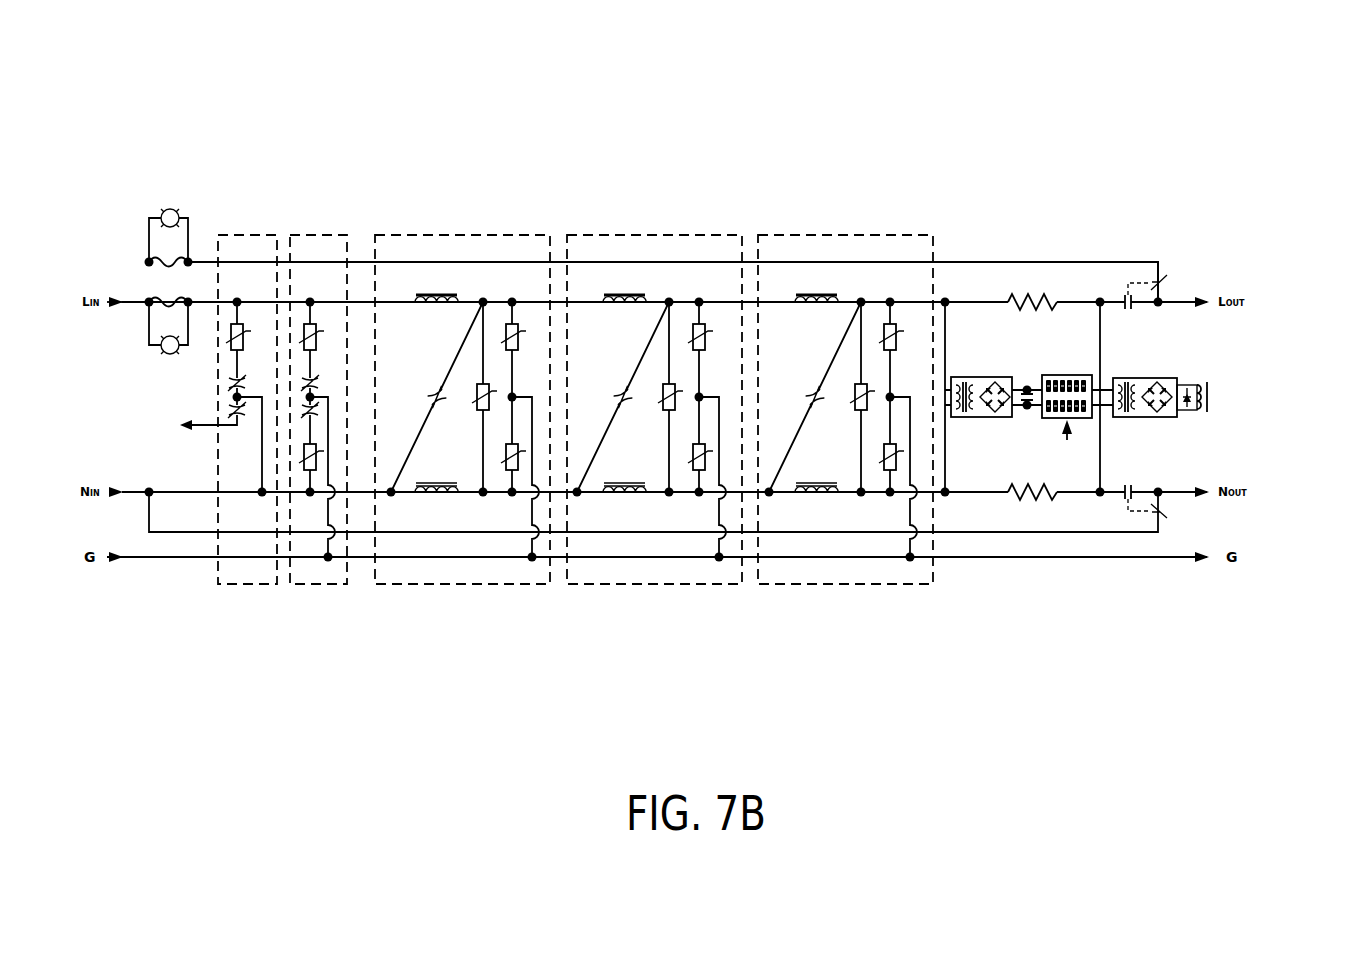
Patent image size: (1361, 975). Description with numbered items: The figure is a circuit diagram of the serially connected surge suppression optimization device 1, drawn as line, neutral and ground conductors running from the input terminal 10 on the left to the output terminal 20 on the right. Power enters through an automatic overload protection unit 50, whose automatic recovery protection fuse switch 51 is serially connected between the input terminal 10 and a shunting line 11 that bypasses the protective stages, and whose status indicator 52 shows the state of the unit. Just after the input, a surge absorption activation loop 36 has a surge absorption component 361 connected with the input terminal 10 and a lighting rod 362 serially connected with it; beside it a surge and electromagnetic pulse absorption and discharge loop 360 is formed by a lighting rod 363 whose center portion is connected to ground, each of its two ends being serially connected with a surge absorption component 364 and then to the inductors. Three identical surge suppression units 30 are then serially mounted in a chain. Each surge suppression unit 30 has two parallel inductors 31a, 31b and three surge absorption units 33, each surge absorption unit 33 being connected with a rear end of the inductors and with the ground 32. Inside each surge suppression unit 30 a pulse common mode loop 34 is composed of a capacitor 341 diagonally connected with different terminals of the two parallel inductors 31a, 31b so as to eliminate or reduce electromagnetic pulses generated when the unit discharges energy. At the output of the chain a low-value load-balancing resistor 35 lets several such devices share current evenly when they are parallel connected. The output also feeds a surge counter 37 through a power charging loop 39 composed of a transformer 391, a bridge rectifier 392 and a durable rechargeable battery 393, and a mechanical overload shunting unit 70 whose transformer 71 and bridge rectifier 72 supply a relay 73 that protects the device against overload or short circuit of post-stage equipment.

The serially connected surge suppression optimization device 1 is at (883, 133).
The input terminal 10 is at (116, 291).
The shunting line 11 is at (970, 262).
The output terminal 20 is at (1231, 260).
The surge suppression unit 30 is at (418, 585).
The inductor 31a is at (437, 290).
The inductor 31b is at (626, 290).
The ground 32 is at (1115, 560).
The surge absorption unit 33 is at (530, 332).
The pulse common mode loop 34 is at (418, 378).
The load-balancing resistor 35 is at (1035, 290).
The surge absorption activation loop 36 is at (233, 408).
The surge counter 37 is at (1063, 375).
The power charging loop 39 is at (1095, 486).
The automatic overload protection unit 50 is at (151, 298).
The automatic recovery protection fuse switch 51 is at (160, 256).
The status indicator 52 is at (162, 200).
The mechanical overload shunting unit 70 is at (1230, 429).
The transformer 71 is at (1133, 415).
The bridge rectifier 72 is at (1168, 415).
The relay 73 is at (1225, 393).
The capacitor 341 is at (446, 405).
The surge and electromagnetic pulse absorption and discharge loop 360 is at (337, 423).
The surge absorption component 361 is at (227, 318).
The lighting rod 362 is at (253, 390).
The lighting rod 363 is at (325, 385).
The surge absorption component 364 is at (298, 318).
The transformer 391 is at (968, 420).
The bridge rectifier 392 is at (995, 420).
The durable rechargeable battery 393 is at (1037, 400).